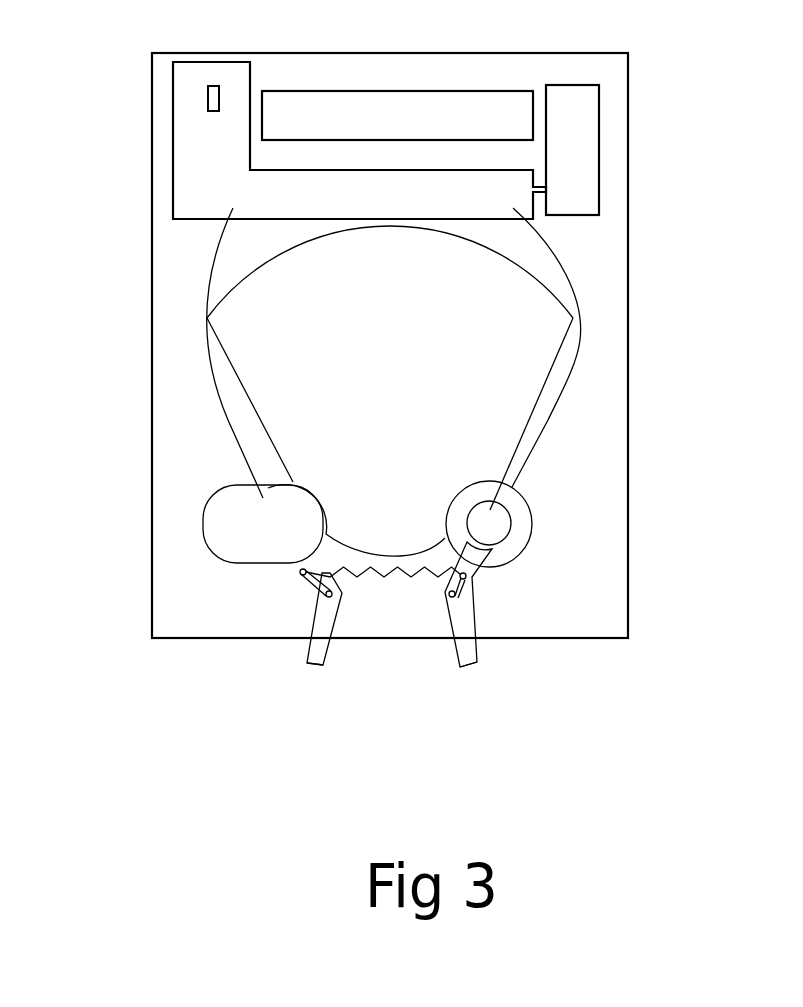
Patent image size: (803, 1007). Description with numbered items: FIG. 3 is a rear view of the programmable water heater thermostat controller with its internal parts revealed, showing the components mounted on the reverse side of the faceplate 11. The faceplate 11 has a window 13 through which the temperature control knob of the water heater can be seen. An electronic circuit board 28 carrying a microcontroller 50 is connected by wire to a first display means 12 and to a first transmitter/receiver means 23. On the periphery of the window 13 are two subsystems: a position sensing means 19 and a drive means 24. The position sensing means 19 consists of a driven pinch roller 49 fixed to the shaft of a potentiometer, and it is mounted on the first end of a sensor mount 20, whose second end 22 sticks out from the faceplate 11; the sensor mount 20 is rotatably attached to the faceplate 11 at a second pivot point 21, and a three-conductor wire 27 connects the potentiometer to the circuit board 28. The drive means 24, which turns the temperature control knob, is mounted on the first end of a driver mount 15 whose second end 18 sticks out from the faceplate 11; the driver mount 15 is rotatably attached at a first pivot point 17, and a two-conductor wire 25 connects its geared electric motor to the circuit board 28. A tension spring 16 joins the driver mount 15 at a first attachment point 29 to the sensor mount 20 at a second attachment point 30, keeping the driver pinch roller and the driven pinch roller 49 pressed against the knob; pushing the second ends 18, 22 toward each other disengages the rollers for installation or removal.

The faceplate 11 is at (465, 345).
The first display means 12 is at (473, 75).
The window 13 is at (294, 368).
The driver mount 15 is at (216, 657).
The tension spring 16 is at (435, 675).
The first pivot point 17 is at (221, 634).
The second end of driver mount 18 is at (206, 721).
The position sensing means 19 is at (565, 538).
The sensor mount 20 is at (547, 626).
The second pivot point 21 is at (549, 627).
The second end of sensor mount 22 is at (555, 706).
The first transmitter/receiver means 23 is at (648, 150).
The drive means 24 is at (178, 502).
The wire 25 is at (247, 382).
The wire 27 is at (603, 347).
The electronic circuit board 28 is at (276, 140).
The first attachment point 29 is at (177, 600).
The second attachment point 30 is at (575, 604).
The driven pinch roller 49 is at (576, 504).
The microcontroller 50 is at (123, 73).